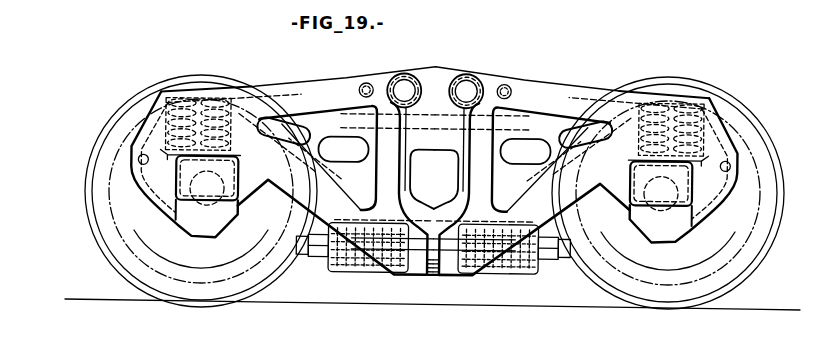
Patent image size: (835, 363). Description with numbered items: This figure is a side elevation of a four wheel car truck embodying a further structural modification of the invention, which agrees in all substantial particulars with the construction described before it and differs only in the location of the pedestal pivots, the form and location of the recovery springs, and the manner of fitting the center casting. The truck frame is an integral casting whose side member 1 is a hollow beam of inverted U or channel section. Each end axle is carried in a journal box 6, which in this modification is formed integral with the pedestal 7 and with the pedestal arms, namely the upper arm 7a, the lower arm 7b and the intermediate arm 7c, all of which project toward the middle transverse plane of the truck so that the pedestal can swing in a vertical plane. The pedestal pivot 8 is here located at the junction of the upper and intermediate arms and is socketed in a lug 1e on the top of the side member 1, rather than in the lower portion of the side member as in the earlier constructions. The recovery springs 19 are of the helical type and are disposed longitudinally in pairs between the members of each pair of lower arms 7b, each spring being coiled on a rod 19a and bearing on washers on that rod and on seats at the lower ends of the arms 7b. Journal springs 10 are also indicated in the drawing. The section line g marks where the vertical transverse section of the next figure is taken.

The side member 1 is at (437, 195).
The lug 1e is at (367, 79).
The journal box 6 is at (433, 200).
The pedestal 7 is at (167, 168).
The upper pedestal arm 7a is at (285, 83).
The lower pedestal arm 7b is at (320, 205).
The intermediate pedestal arm 7c is at (380, 132).
The pedestal pivot 8 is at (402, 85).
The journal springs 10 is at (185, 100).
The recovery spring 19 is at (350, 265).
The rod 19a is at (567, 243).
The section line g g is at (488, 82).